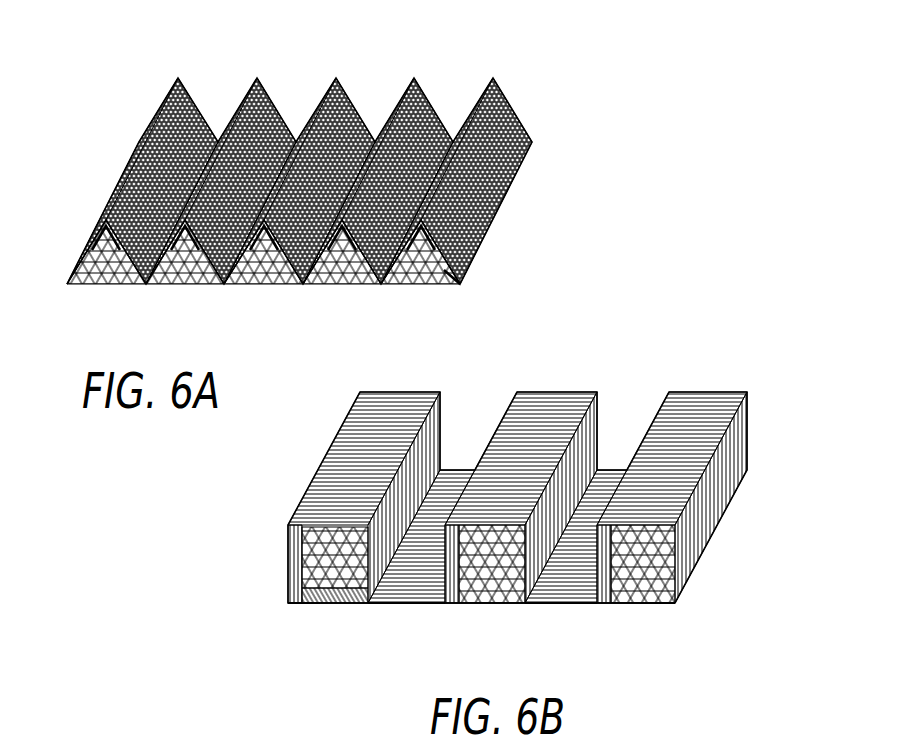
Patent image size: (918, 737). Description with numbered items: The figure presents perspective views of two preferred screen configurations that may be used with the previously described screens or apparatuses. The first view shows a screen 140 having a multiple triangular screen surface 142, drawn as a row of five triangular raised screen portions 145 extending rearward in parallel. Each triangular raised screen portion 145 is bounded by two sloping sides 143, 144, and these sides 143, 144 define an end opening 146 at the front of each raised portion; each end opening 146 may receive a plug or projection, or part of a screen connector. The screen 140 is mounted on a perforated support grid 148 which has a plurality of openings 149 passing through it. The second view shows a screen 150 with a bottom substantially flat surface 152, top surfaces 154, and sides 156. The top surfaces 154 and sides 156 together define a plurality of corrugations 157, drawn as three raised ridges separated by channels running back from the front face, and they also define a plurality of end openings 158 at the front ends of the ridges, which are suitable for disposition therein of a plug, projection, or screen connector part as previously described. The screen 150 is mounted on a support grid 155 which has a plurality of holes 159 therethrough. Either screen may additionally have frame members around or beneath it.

In FIG. 6A, the screen 140 is at (430, 116).
In FIG. 6A, the multiple triangular screen surface 142 is at (347, 118).
In FIG. 6A, the side of triangular raised screen portion 143 is at (203, 287).
In FIG. 6A, the side of triangular raised screen portion 144 is at (155, 286).
In FIG. 6A, the triangular raised screen portion 145 is at (248, 70).
In FIG. 6A, the end opening 146 is at (108, 290).
In FIG. 6A, the perforated support grid 148 is at (102, 289).
In FIG. 6A, the opening 149 is at (275, 286).
In FIG. 6B, the screen 150 is at (750, 411).
In FIG. 6B, the bottom substantially flat surface 152 is at (405, 604).
In FIG. 6B, the top surface 154 is at (383, 428).
In FIG. 6B, the support grid 155 is at (664, 571).
In FIG. 6B, the side 156 is at (302, 552).
In FIG. 6B, the corrugation 157 is at (425, 462).
In FIG. 6B, the end opening 158 is at (323, 603).
In FIG. 6B, the hole 159 is at (320, 600).